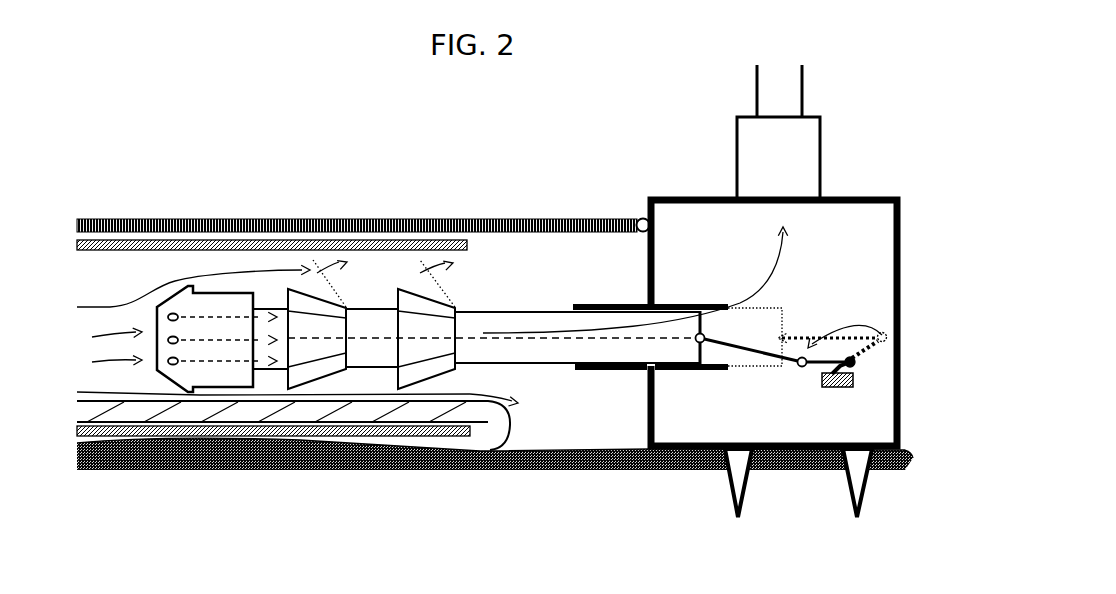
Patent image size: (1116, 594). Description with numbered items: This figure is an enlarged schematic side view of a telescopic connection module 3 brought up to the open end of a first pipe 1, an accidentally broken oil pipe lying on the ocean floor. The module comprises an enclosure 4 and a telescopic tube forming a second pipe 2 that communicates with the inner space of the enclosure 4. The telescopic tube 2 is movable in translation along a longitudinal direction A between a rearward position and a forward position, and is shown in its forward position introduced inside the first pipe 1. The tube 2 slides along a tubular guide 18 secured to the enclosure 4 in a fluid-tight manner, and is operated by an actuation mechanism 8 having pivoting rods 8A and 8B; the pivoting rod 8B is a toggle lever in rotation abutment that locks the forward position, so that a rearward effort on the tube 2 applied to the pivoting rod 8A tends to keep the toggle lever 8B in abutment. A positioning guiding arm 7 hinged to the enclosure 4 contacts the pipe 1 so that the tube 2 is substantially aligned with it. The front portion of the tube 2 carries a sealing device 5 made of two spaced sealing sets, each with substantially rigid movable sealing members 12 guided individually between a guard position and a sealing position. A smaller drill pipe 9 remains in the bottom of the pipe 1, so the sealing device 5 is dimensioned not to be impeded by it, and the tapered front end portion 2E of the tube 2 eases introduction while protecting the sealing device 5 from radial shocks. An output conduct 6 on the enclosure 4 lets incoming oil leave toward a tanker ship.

The first pipe 1 is at (170, 243).
The telescopic tube 2 is at (522, 312).
The front end portion 2E is at (163, 300).
The telescopic connection module 3 is at (535, 176).
The enclosure 4 is at (675, 202).
The sealing device 5 is at (386, 396).
The output conduct 6 is at (757, 110).
The positioning guiding arm 7 is at (197, 206).
The actuation mechanism 8 is at (791, 353).
The pivoting rod 8A is at (753, 347).
The toggle lever 8B is at (822, 363).
The drill pipe 9 is at (247, 413).
The sealing member 12 is at (417, 302).
The tubular guide 18 is at (615, 372).
The longitudinal direction A is at (570, 342).